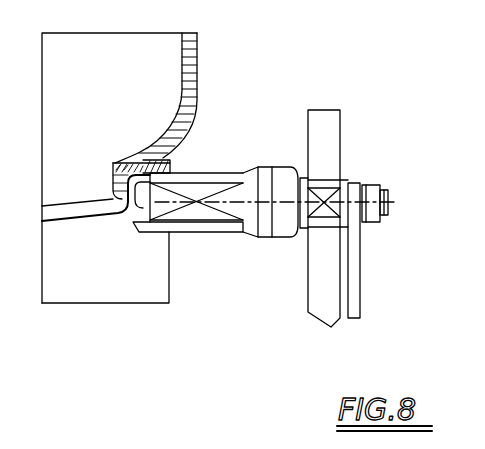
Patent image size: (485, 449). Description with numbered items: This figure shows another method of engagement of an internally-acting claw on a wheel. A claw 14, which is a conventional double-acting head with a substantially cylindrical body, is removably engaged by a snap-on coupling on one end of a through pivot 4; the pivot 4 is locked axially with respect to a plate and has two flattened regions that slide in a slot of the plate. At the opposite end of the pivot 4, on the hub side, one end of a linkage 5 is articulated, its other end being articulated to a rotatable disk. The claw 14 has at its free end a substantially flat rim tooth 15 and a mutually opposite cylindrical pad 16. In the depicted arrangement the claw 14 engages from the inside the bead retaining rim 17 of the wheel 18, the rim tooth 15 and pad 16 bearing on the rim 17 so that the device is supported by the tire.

The through pivot 4 is at (324, 180).
The linkage 5 is at (361, 275).
The claw 14 is at (210, 233).
The rim tooth 15 is at (141, 231).
The cylindrical pad 16 is at (147, 181).
The bead retaining rim 17 is at (152, 161).
The wheel 18 is at (80, 218).